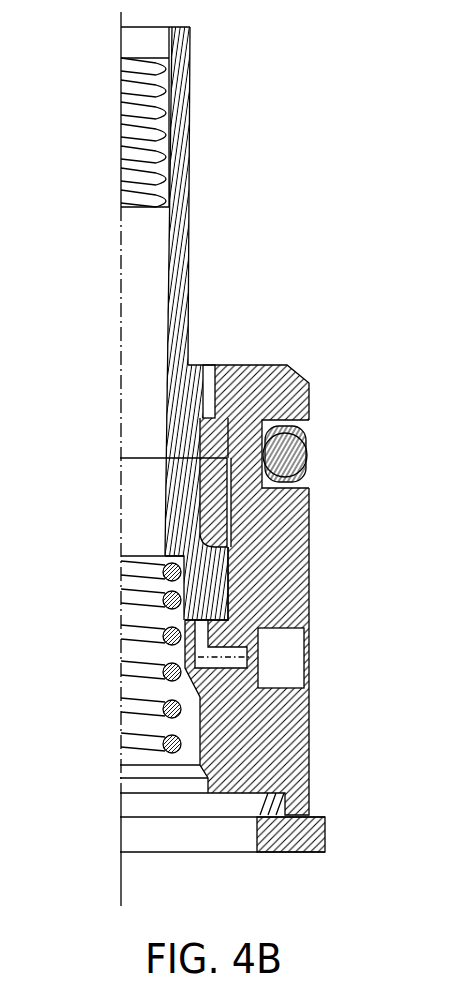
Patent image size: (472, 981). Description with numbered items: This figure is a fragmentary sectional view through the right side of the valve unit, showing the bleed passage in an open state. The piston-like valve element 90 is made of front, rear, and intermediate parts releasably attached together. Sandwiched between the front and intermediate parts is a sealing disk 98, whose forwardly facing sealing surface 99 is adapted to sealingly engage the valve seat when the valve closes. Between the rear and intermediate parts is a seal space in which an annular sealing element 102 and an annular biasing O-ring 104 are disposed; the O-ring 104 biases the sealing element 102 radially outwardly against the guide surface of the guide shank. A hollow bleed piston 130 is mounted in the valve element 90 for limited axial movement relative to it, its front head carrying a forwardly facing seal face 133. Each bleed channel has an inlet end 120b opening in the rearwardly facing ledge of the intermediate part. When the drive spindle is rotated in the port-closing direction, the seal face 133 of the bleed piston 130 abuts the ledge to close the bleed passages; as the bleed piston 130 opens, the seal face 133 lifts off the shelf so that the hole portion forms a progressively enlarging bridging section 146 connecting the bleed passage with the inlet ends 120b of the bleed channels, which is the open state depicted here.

The bleed piston 130 is at (205, 268).
The valve element 90 is at (325, 521).
The biasing O-ring 104 is at (309, 429).
The sealing element 102 is at (311, 480).
The bushing 146 is at (182, 620).
The seal face 133 is at (227, 617).
The inlet end 120b is at (225, 641).
The sealing disk 98 is at (326, 832).
The sealing surface 99 is at (307, 853).